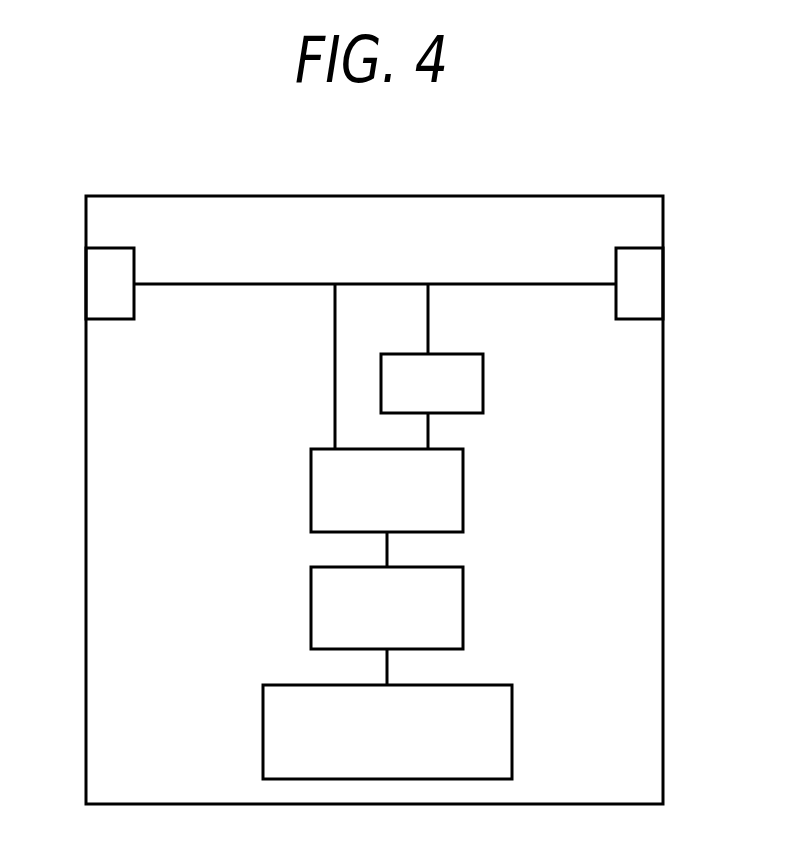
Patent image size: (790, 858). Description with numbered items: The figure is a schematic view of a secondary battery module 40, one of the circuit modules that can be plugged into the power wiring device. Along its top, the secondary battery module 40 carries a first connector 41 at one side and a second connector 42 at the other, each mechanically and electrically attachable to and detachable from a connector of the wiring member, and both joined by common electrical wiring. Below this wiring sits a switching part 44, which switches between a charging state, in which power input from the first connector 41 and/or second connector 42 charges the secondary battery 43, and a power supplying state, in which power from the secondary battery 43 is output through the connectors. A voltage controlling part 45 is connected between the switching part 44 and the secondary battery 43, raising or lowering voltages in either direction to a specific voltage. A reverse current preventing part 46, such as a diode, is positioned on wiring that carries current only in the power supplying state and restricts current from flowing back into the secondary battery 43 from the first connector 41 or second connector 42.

The secondary battery module 40 is at (509, 196).
The first connector 41 is at (108, 248).
The second connector 42 is at (640, 248).
The secondary battery 43 is at (512, 730).
The switching part 44 is at (463, 491).
The voltage controlling part 45 is at (463, 611).
The reverse current preventing part 46 is at (483, 383).